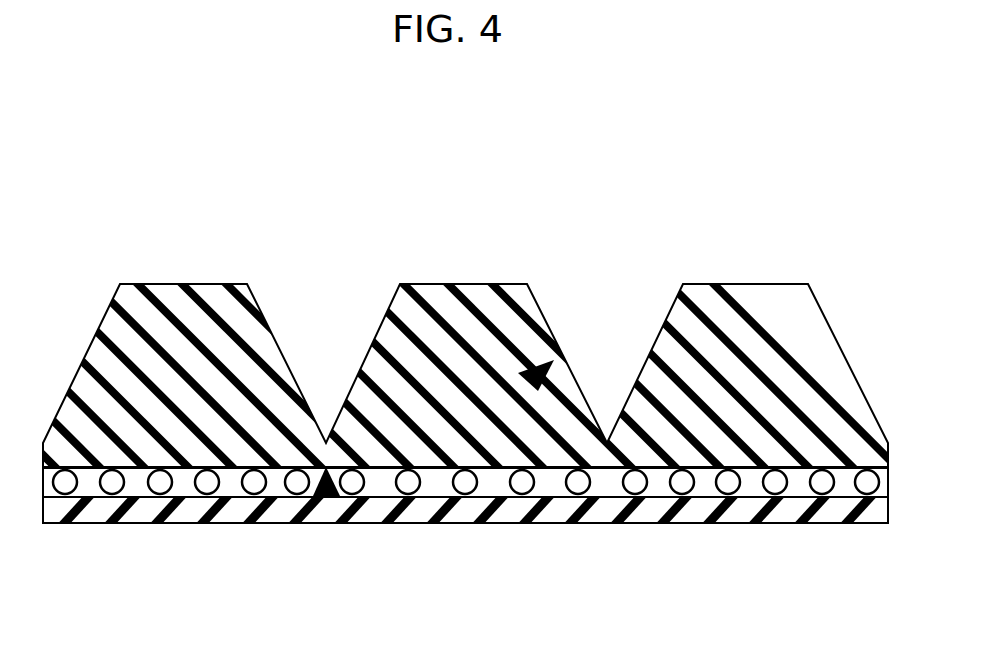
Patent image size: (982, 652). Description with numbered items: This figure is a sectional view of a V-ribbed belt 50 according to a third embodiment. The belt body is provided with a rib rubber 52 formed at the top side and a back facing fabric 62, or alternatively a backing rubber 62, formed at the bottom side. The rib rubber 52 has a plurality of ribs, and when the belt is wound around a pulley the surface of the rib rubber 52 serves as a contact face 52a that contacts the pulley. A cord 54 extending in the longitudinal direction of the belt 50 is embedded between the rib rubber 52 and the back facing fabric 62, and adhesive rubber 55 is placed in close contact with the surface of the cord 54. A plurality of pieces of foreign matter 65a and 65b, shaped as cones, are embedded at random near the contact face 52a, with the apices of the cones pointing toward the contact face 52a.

The V-ribbed belt 50 is at (460, 383).
The rib rubber 52 is at (191, 358).
The contact face 52a is at (505, 284).
The foreign matter 65b is at (546, 372).
The cord 54 is at (111, 486).
The foreign matter 65a is at (327, 498).
The back facing fabric 62 is at (630, 510).
The adhesive rubber 55 is at (797, 486).